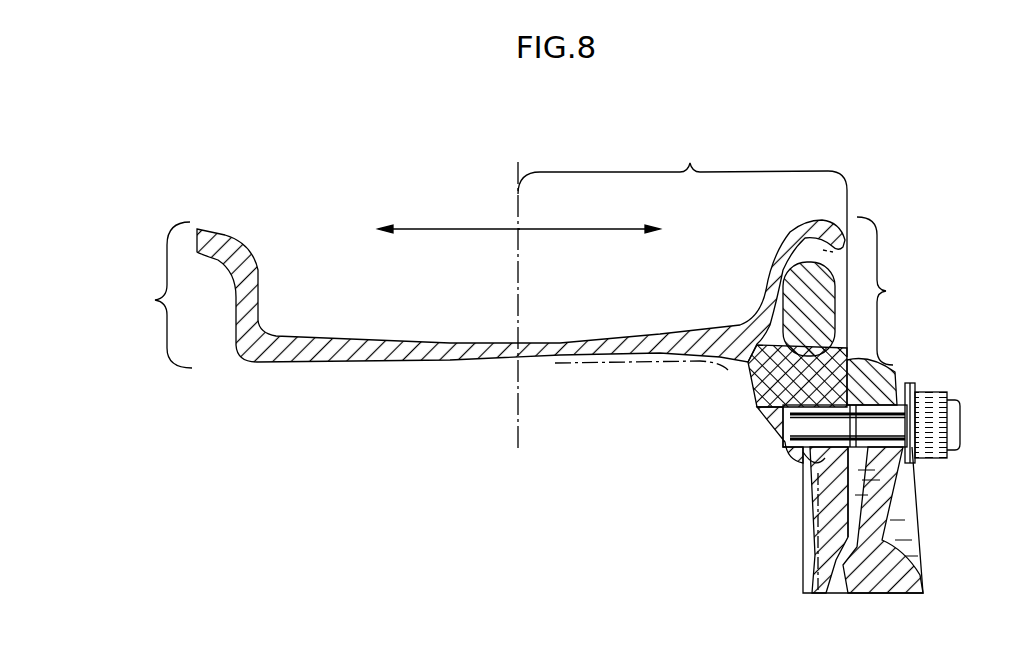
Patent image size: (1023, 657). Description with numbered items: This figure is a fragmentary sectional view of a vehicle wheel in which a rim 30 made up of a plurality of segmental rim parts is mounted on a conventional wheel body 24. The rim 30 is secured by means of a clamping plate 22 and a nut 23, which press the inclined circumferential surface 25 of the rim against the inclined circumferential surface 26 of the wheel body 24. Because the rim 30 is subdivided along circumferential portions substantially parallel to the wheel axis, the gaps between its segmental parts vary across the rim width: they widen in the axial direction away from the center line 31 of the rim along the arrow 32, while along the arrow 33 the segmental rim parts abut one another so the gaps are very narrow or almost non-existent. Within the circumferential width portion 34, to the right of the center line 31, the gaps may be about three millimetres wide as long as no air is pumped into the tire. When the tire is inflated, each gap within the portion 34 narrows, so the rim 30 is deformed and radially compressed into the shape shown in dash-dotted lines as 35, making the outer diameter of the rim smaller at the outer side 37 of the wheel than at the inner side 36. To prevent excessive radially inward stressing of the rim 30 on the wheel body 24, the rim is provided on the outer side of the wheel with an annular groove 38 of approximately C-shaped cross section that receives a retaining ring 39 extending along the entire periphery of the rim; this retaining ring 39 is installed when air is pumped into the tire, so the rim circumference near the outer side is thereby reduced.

The clamping plate 22 is at (880, 507).
The nut 23 is at (933, 437).
The wheel body 24 is at (827, 518).
The circumferential surface of the rim 25 is at (753, 372).
The circumferential surface of the wheel body 26 is at (787, 440).
The rim 30 is at (340, 355).
The center line of the rim 31 is at (516, 292).
The arrow 32 is at (604, 231).
The arrow 33 is at (434, 233).
The circumferential width portion 34 is at (682, 246).
The deformed rim shape 35 is at (657, 368).
The inner side of the wheel 36 is at (157, 295).
The outer side of the wheel 37 is at (883, 291).
The annular groove 38 is at (853, 357).
The retaining ring 39 is at (826, 272).